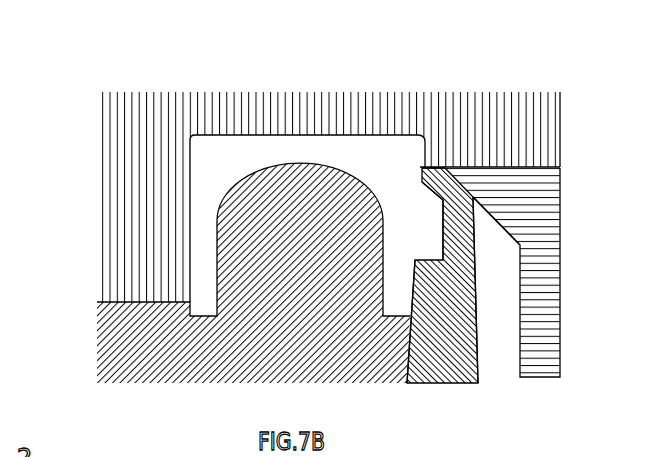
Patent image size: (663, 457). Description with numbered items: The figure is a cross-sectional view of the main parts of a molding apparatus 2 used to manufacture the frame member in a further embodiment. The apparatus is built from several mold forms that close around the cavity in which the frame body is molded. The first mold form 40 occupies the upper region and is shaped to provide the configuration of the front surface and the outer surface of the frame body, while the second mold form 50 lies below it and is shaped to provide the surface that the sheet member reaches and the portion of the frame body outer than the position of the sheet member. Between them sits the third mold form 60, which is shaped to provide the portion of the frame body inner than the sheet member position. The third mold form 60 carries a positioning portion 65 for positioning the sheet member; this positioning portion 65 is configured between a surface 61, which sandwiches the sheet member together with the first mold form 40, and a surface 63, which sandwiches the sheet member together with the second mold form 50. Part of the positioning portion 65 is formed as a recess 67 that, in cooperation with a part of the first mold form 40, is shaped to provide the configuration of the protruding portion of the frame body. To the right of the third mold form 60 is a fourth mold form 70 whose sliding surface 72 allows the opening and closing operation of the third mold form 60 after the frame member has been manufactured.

The molding apparatus 2 is at (84, 51).
The first mold form 40 is at (552, 115).
The second mold form 50 is at (97, 353).
The third mold form 60 is at (480, 384).
The surface 61 is at (432, 167).
The surface 63 is at (403, 384).
The positioning portion 65 is at (404, 186).
The recess 67 is at (432, 220).
The fourth mold form 70 is at (561, 378).
The sliding surface 72 is at (485, 240).